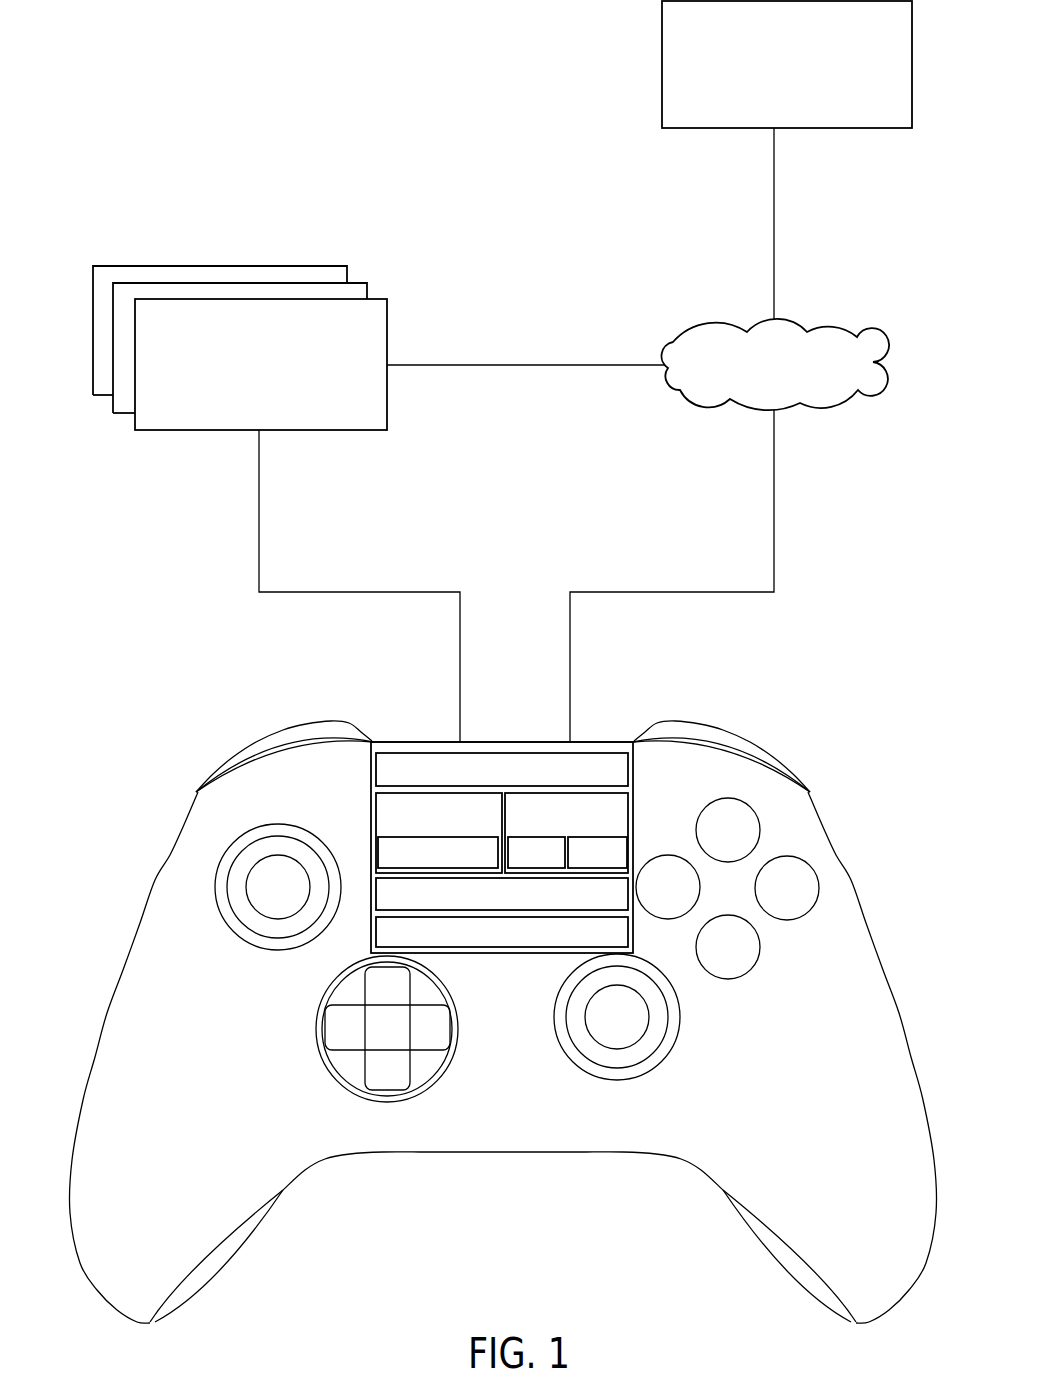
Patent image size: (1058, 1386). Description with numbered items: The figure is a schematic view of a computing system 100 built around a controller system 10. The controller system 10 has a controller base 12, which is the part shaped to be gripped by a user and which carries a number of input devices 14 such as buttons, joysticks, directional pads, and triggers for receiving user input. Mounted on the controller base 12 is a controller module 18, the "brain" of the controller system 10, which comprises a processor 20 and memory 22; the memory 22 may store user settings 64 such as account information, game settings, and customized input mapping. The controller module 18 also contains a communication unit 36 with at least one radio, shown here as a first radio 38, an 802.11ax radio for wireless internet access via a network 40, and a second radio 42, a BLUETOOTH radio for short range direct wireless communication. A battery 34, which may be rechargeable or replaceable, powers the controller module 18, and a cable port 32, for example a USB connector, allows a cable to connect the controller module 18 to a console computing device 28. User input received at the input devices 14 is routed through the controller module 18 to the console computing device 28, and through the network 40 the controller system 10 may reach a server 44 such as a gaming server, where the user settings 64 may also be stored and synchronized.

The computing system 100 is at (100, 93).
The controller system 10 is at (100, 793).
The controller base 12 is at (163, 855).
The input device 14 is at (265, 732).
The controller module 18 is at (593, 742).
The processor 20 is at (502, 769).
The memory 22 is at (439, 833).
The user settings 64 is at (438, 852).
The communication unit 36 is at (566, 833).
The first radio 38 is at (536, 852).
The second radio 42 is at (597, 852).
The battery 34 is at (502, 894).
The cable port 32 is at (502, 932).
The console computing device 28 is at (240, 348).
The network 40 is at (775, 364).
The server 44 is at (787, 64).